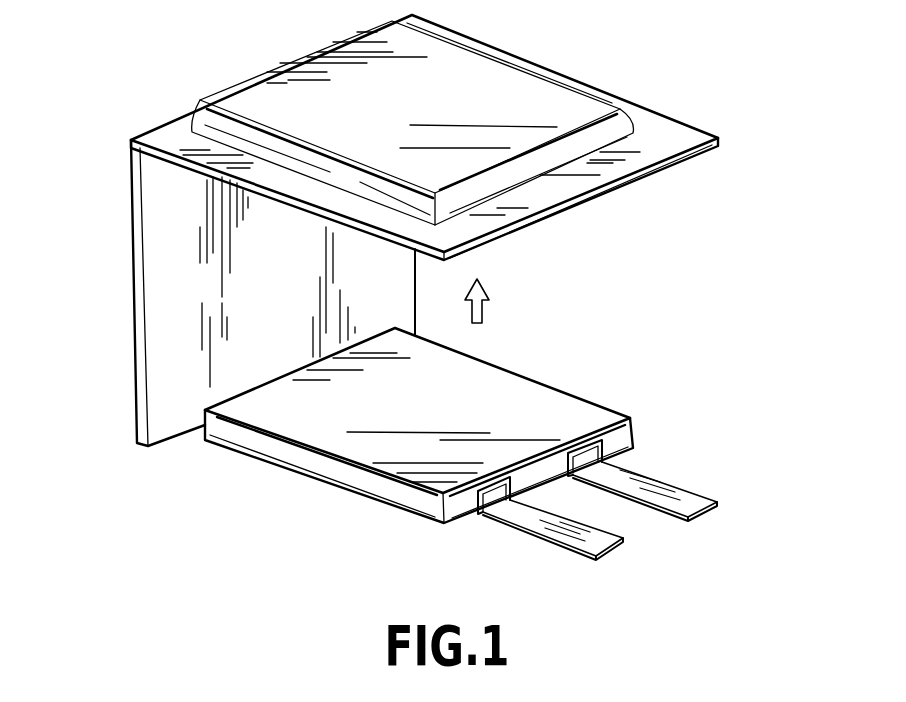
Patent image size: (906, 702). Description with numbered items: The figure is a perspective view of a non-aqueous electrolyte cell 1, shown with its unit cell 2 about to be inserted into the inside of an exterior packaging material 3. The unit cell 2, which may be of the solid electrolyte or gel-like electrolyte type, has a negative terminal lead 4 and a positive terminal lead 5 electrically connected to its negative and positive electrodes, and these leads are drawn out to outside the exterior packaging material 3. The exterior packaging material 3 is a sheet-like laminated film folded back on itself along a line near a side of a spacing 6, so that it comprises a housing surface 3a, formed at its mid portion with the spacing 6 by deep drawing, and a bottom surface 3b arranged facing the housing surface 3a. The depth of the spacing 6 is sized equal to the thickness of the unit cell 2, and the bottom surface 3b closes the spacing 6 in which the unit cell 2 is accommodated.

The non-aqueous electrolyte cell 1 is at (760, 362).
The unit cell 2 is at (528, 390).
The exterior packaging material 3 is at (652, 120).
The housing surface 3a is at (673, 155).
The bottom surface 3b is at (140, 278).
The negative terminal lead 4 is at (540, 525).
The positive terminal lead 5 is at (672, 493).
The spacing 6 is at (497, 70).